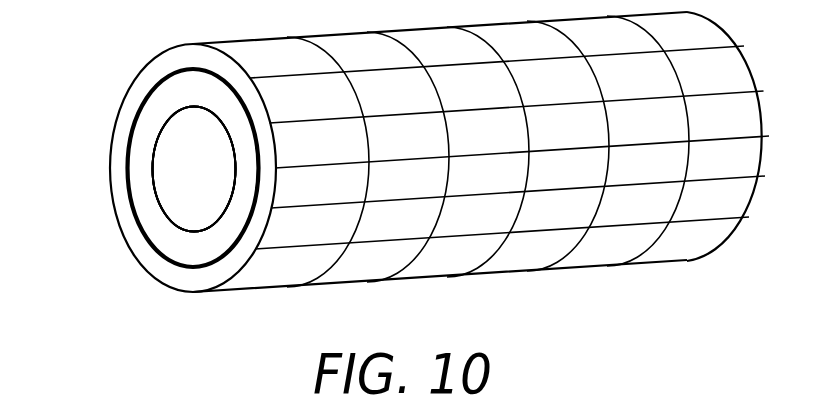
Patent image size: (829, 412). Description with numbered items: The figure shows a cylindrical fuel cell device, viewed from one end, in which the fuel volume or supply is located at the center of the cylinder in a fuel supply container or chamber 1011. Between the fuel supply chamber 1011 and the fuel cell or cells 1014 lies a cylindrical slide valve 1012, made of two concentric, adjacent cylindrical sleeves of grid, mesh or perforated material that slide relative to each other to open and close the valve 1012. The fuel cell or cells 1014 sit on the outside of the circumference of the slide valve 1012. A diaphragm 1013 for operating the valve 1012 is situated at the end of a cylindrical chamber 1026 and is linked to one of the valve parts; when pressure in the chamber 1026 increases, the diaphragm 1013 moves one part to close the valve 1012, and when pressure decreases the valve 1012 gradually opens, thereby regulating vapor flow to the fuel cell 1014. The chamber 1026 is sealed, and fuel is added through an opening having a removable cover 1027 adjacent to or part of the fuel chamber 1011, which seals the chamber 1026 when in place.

The fuel cell 1014 is at (185, 52).
The cylindrical slide valve 1012 is at (157, 83).
The diaphragm 1013 is at (142, 130).
The fuel supply container or chamber 1011 is at (168, 163).
The removable cover 1027 is at (175, 192).
The cylindrical chamber 1026 is at (203, 250).